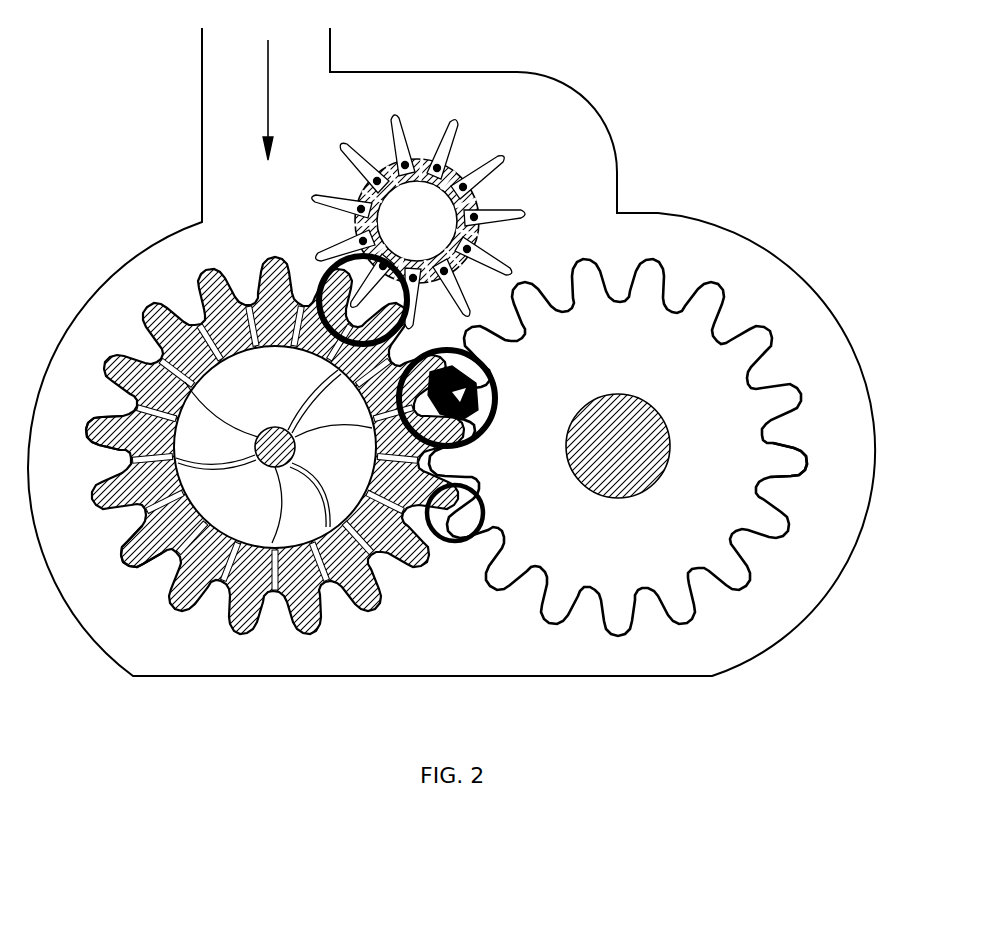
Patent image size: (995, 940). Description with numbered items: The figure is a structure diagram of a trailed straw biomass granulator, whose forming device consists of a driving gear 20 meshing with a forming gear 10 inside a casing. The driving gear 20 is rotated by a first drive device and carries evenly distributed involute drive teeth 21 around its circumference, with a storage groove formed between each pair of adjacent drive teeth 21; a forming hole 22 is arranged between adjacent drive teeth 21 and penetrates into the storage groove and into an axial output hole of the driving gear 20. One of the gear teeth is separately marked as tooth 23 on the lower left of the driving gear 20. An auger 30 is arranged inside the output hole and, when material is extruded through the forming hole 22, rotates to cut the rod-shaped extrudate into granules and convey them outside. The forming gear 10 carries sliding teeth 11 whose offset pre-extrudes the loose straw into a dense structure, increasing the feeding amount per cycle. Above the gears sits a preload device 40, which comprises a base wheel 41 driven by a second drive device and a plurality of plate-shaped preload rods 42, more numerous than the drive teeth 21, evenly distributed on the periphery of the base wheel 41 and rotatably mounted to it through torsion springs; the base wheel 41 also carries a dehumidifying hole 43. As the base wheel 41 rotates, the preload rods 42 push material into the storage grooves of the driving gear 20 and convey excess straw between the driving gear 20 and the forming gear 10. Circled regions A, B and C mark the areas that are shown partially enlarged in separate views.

The forming gear 10 is at (726, 390).
The sliding teeth 11 is at (783, 458).
The driving gear 20 is at (192, 391).
The drive teeth 21 is at (93, 418).
The forming hole 22 is at (373, 486).
The gear tooth 23 is at (133, 527).
The auger 30 is at (288, 518).
The preload device 40 is at (482, 128).
The base wheel 41 is at (482, 193).
The preload rod 42 is at (523, 219).
The dehumidifying hole 43 is at (363, 190).
The partially enlarged region A is at (503, 384).
The partially enlarged region B is at (324, 258).
The partially enlarged region C is at (480, 514).